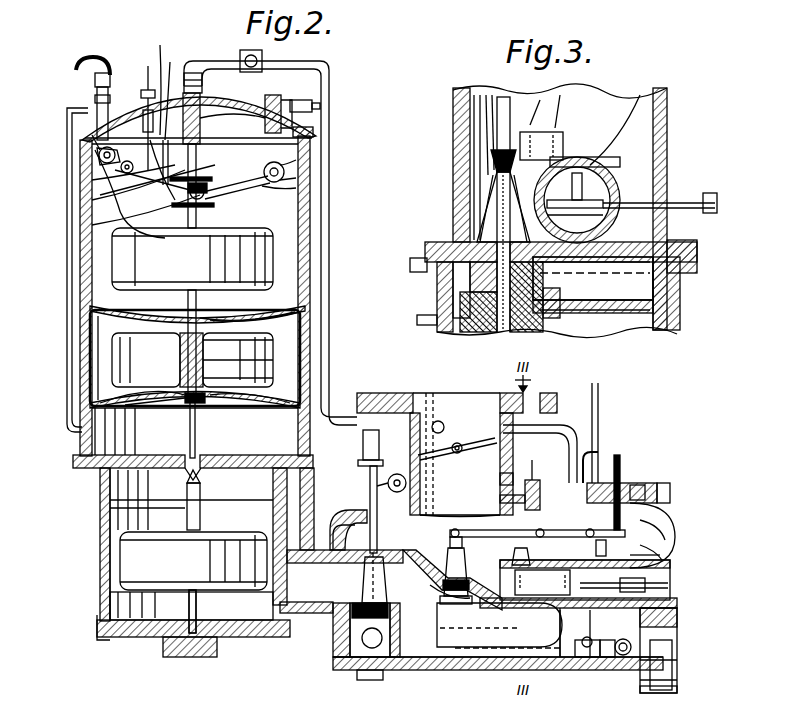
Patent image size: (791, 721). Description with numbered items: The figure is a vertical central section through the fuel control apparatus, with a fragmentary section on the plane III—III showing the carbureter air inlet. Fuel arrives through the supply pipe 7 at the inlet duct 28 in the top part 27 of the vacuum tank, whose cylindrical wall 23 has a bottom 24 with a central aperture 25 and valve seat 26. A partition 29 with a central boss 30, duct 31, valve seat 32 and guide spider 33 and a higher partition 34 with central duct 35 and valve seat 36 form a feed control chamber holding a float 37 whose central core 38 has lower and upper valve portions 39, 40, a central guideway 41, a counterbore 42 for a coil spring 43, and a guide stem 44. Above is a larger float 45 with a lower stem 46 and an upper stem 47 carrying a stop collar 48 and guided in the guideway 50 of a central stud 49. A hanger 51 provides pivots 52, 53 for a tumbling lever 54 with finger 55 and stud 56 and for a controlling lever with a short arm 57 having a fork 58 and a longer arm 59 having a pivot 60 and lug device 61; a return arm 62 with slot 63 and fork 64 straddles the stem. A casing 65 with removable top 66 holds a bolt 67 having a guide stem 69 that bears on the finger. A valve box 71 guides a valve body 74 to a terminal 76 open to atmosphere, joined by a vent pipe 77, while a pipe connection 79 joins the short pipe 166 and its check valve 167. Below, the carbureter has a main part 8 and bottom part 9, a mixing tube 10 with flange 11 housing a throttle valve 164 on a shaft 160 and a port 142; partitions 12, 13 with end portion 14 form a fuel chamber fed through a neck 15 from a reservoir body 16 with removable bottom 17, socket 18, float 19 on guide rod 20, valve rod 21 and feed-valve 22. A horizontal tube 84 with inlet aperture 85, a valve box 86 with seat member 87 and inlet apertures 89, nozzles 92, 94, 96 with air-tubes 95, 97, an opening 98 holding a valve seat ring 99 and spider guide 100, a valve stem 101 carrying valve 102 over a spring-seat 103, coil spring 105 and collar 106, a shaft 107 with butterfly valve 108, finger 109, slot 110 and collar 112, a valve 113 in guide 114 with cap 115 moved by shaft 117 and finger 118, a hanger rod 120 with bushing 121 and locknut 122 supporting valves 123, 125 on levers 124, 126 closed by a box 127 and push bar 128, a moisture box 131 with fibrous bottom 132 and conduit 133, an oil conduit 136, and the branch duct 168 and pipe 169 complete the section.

In FIG. 2, the supply pipe 7 is at (303, 100).
In FIG. 2, the main part 8 is at (352, 514).
In FIG. 3, the main part 8 is at (667, 156).
In FIG. 2, the bottom part 9 is at (445, 670).
In FIG. 3, the bottom part 9 is at (680, 298).
In FIG. 2, the mixing tube 10 is at (475, 400).
In FIG. 2, the supporting flange 11 is at (545, 395).
In FIG. 2, the horizontal partition 12 is at (338, 530).
In FIG. 3, the horizontal partition 12 is at (697, 268).
In FIG. 2, the lower partition 13 is at (425, 670).
In FIG. 3, the lower partition 13 is at (600, 312).
In FIG. 2, the end portion 14 is at (563, 670).
In FIG. 3, the end portion 14 is at (632, 280).
In FIG. 2, the neck 15 is at (312, 613).
In FIG. 2, the reservoir body 16 is at (105, 599).
In FIG. 2, the removable bottom 17 is at (140, 637).
In FIG. 2, the central socket 18 is at (190, 640).
In FIG. 2, the float 19 is at (135, 557).
In FIG. 2, the guide rod 20 is at (238, 637).
In FIG. 2, the central valve rod 21 is at (187, 508).
In FIG. 2, the feed-valve 22 is at (185, 485).
In FIG. 2, the cylindrical wall 23 is at (80, 442).
In FIG. 2, the bottom 24 is at (287, 478).
In FIG. 2, the central aperture 25 is at (196, 468).
In FIG. 2, the valve seat 26 is at (200, 480).
In FIG. 2, the top part 27 is at (230, 112).
In FIG. 2, the inlet duct 28 is at (272, 95).
In FIG. 2, the partition 29 is at (165, 405).
In FIG. 2, the central boss 30 is at (180, 405).
In FIG. 2, the duct 31 is at (235, 400).
In FIG. 2, the valve seat 32 is at (195, 397).
In FIG. 2, the guide spider 33 is at (205, 402).
In FIG. 2, the partition 34 is at (300, 313).
In FIG. 2, the central duct 35 is at (300, 306).
In FIG. 2, the valve seat 36 is at (225, 318).
In FIG. 2, the float 37 is at (275, 341).
In FIG. 2, the central core 38 is at (275, 361).
In FIG. 2, the valve portion 39 is at (275, 379).
In FIG. 2, the valve portion 40 is at (160, 325).
In FIG. 2, the central guideway 41 is at (180, 383).
In FIG. 2, the counterbore 42 is at (205, 355).
In FIG. 2, the coil spring 43 is at (180, 345).
In FIG. 2, the guide stem 44 is at (175, 437).
In FIG. 2, the float 45 is at (273, 250).
In FIG. 2, the stem 46 is at (99, 366).
In FIG. 2, the stem 47 is at (200, 160).
In FIG. 2, the stop collar 48 is at (172, 205).
In FIG. 2, the central stud 49 is at (197, 126).
In FIG. 2, the guideway 50 is at (200, 105).
In FIG. 2, the hanger 51 is at (147, 108).
In FIG. 2, the pivot 52 is at (120, 198).
In FIG. 2, the pivot 53 is at (110, 182).
In FIG. 2, the tumbling lever 54 is at (130, 222).
In FIG. 2, the finger 55 is at (168, 170).
In FIG. 2, the stud 56 is at (99, 155).
In FIG. 2, the short arm 57 is at (121, 168).
In FIG. 2, the fork 58 is at (100, 164).
In FIG. 2, the longer arm 59 is at (250, 178).
In FIG. 2, the pivot 60 is at (290, 180).
In FIG. 2, the lug device 61 is at (284, 172).
In FIG. 2, the return arm 62 is at (268, 187).
In FIG. 2, the slot 63 is at (296, 160).
In FIG. 2, the fork 64 is at (205, 195).
In FIG. 2, the casing 65 is at (172, 92).
In FIG. 2, the removable top 66 is at (157, 81).
In FIG. 2, the bolt 67 is at (92, 124).
In FIG. 2, the guide stem 69 is at (136, 68).
In FIG. 2, the valve box 71 is at (95, 84).
In FIG. 2, the valve body 74 is at (97, 143).
In FIG. 2, the outer end terminal 76 is at (78, 62).
In FIG. 2, the vent pipe 77 is at (67, 294).
In FIG. 2, the pipe connection 79 is at (185, 78).
In FIG. 2, the horizontal tube 84 is at (678, 592).
In FIG. 3, the horizontal tube 84 is at (667, 180).
In FIG. 2, the inlet aperture 85 is at (677, 622).
In FIG. 2, the valve box 86 is at (677, 680).
In FIG. 2, the conical valve seat member 87 is at (665, 693).
In FIG. 2, the inlet apertures 89 is at (677, 660).
In FIG. 2, the nozzle 92 is at (365, 578).
In FIG. 2, the nozzle 94 is at (446, 565).
In FIG. 2, the air-tube 95 is at (430, 586).
In FIG. 2, the nozzle 96 is at (512, 562).
In FIG. 3, the nozzle 96 is at (488, 192).
In FIG. 2, the air-tube 97 is at (490, 650).
In FIG. 3, the air-tube 97 is at (455, 280).
In FIG. 2, the opening 98 is at (665, 512).
In FIG. 2, the valve seat ring 99 is at (657, 486).
In FIG. 2, the spider guide 100 is at (637, 485).
In FIG. 2, the valve stem 101 is at (619, 455).
In FIG. 2, the valve 102 is at (670, 493).
In FIG. 2, the spring-seat 103 is at (655, 557).
In FIG. 2, the coil spring 105 is at (662, 545).
In FIG. 2, the collar 106 is at (672, 537).
In FIG. 2, the shaft 107 is at (600, 588).
In FIG. 3, the shaft 107 is at (688, 203).
In FIG. 2, the butterfly valve 108 is at (636, 588).
In FIG. 3, the butterfly valve 108 is at (605, 218).
In FIG. 2, the finger 109 is at (670, 578).
In FIG. 3, the slot 110 is at (585, 173).
In FIG. 3, the collar 112 is at (717, 198).
In FIG. 2, the valve 113 is at (378, 535).
In FIG. 2, the guide 114 is at (358, 463).
In FIG. 2, the cap 115 is at (363, 440).
In FIG. 2, the shaft 117 is at (406, 483).
In FIG. 2, the finger 118 is at (370, 476).
In FIG. 2, the hanger rod 120 is at (533, 482).
In FIG. 2, the bushing 121 is at (503, 498).
In FIG. 2, the locknut 122 is at (500, 479).
In FIG. 2, the valve 123 is at (450, 534).
In FIG. 2, the lever 124 is at (470, 528).
In FIG. 2, the valve 125 is at (458, 545).
In FIG. 3, the valve 125 is at (500, 118).
In FIG. 2, the lever 126 is at (596, 549).
In FIG. 2, the box 127 is at (542, 582).
In FIG. 3, the box 127 is at (553, 132).
In FIG. 2, the push bar 128 is at (470, 650).
In FIG. 2, the box 131 is at (585, 650).
In FIG. 2, the bottom 132 is at (622, 670).
In FIG. 2, the conduit 133 is at (598, 394).
In FIG. 3, the conduit 133 is at (418, 258).
In FIG. 2, the conduit 136 is at (672, 650).
In FIG. 2, the port 142 is at (432, 395).
In FIG. 2, the shaft 160 is at (463, 450).
In FIG. 2, the throttle valve 164 is at (458, 440).
In FIG. 2, the short pipe 166 is at (329, 117).
In FIG. 2, the check valve 167 is at (243, 55).
In FIG. 2, the branch pipe duct 168 is at (558, 427).
In FIG. 2, the pipe 169 is at (588, 455).
In FIG. 3, the pipe 169 is at (425, 325).